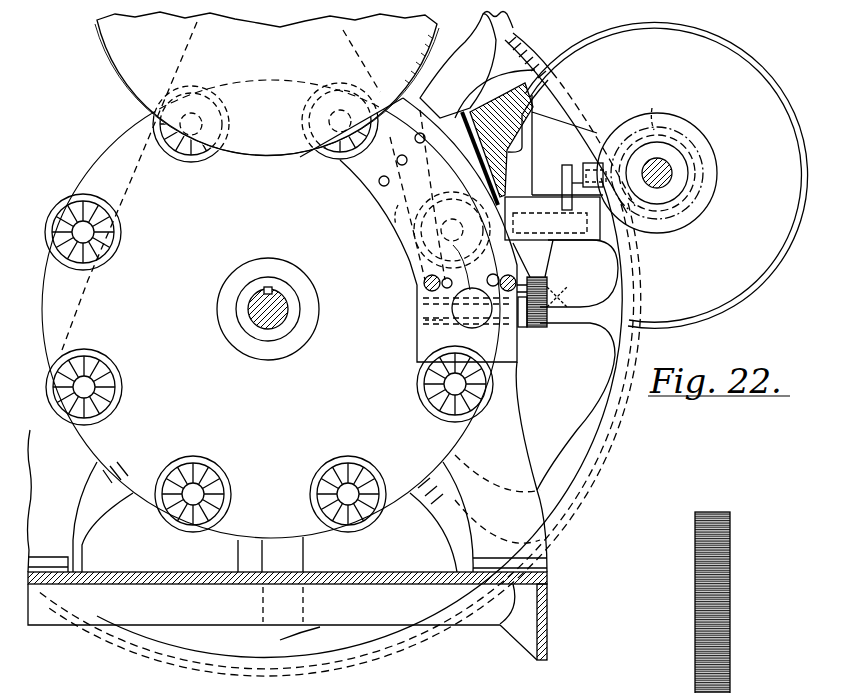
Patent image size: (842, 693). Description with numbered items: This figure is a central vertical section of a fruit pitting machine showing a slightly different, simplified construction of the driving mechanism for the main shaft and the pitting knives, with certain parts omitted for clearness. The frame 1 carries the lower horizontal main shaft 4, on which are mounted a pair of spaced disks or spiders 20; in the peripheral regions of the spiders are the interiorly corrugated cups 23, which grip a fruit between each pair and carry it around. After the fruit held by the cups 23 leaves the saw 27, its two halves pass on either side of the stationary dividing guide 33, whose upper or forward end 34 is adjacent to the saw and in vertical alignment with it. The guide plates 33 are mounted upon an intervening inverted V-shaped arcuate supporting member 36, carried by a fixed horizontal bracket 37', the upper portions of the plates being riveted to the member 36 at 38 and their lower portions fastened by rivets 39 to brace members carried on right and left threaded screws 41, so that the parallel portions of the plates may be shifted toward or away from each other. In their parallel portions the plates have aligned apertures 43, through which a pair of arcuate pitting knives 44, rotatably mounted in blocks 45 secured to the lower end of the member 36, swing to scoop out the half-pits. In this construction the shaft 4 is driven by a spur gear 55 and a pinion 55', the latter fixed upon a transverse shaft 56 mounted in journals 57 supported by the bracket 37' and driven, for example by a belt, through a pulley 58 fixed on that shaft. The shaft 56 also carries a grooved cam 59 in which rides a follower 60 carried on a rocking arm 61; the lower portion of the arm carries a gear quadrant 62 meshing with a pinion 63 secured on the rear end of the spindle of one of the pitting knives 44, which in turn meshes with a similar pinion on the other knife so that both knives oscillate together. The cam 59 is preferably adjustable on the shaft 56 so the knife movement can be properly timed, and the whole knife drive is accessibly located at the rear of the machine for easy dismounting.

The frame 1 is at (334, 427).
The main shaft 4 is at (257, 308).
The disks or spiders 20 is at (116, 148).
The interiorly corrugated cups 23 is at (205, 160).
The saw 27 is at (267, 84).
The dividing guide 33 is at (357, 170).
The upper or forward end of the guide 34 is at (312, 168).
The supporting member 36 is at (393, 214).
The horizontal bracket 37' is at (466, 65).
The rivets 38 is at (379, 185).
The rivets 39 is at (443, 283).
The right and left threaded screws 41 is at (426, 283).
The aligned apertures 43 is at (470, 292).
The arcuate pitting knives 44 is at (465, 327).
The blocks 45 is at (423, 322).
The spur gear 55 is at (617, 352).
The pinion 55' is at (659, 110).
The transverse shaft 56 is at (660, 175).
The journals 57 is at (597, 133).
The pulley 58 is at (739, 53).
The grooved cam 59 is at (684, 128).
The follower 60 is at (583, 163).
The rocking arm 61 is at (567, 185).
The gear quadrant 62 is at (537, 274).
The pinion 63 is at (552, 299).